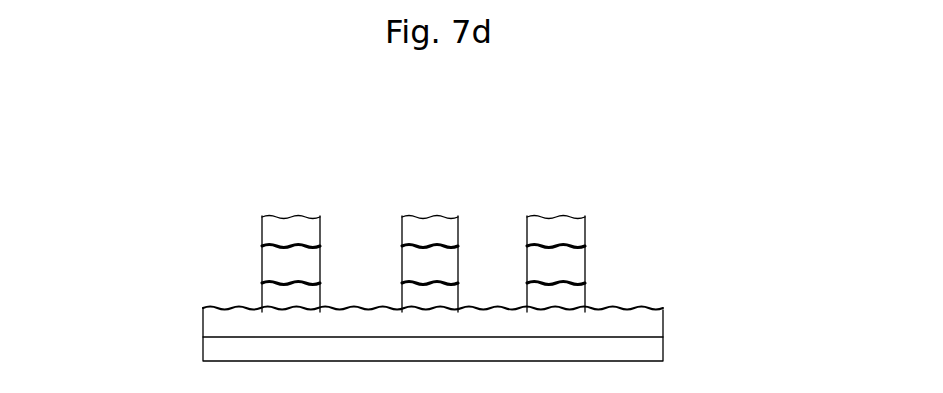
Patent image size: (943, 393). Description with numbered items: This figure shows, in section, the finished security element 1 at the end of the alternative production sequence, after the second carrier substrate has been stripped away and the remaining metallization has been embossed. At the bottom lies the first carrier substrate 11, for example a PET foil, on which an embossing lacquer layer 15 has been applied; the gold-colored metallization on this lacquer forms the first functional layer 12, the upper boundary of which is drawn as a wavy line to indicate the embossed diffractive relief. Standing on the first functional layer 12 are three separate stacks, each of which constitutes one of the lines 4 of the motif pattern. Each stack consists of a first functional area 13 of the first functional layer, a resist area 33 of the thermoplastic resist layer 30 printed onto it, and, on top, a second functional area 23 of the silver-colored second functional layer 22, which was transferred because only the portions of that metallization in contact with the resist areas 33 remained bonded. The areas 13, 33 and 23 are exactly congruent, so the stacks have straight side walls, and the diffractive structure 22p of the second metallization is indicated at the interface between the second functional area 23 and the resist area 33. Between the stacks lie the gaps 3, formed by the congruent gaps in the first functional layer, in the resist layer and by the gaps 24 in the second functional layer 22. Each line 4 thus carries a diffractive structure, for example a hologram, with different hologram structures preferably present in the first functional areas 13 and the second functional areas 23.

The security element 1 is at (192, 147).
The gaps 3 is at (367, 214).
The lines 4 is at (297, 200).
The first carrier substrate 11 is at (663, 352).
The first functional layer 12 is at (668, 285).
The first functional areas 13 is at (423, 301).
The embossing lacquer layer 15 is at (663, 330).
The second functional layer 22 is at (607, 217).
The diffractive structure 22p is at (262, 245).
The second functional areas 23 is at (428, 232).
The gaps in the second functional layer 24 is at (333, 247).
The resist layer 30 is at (620, 253).
The resist areas 33 is at (428, 267).